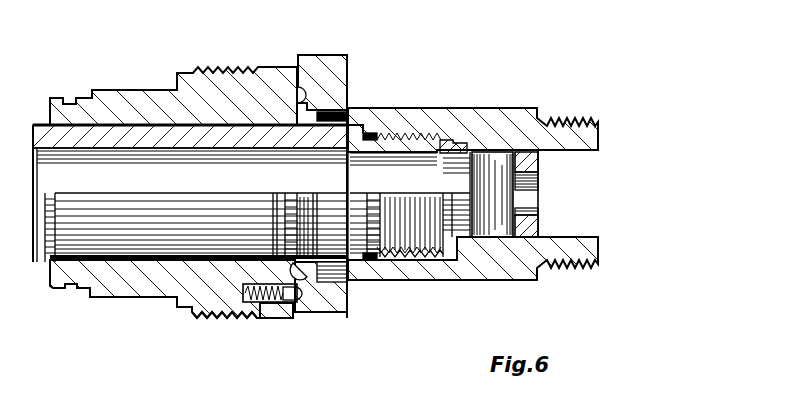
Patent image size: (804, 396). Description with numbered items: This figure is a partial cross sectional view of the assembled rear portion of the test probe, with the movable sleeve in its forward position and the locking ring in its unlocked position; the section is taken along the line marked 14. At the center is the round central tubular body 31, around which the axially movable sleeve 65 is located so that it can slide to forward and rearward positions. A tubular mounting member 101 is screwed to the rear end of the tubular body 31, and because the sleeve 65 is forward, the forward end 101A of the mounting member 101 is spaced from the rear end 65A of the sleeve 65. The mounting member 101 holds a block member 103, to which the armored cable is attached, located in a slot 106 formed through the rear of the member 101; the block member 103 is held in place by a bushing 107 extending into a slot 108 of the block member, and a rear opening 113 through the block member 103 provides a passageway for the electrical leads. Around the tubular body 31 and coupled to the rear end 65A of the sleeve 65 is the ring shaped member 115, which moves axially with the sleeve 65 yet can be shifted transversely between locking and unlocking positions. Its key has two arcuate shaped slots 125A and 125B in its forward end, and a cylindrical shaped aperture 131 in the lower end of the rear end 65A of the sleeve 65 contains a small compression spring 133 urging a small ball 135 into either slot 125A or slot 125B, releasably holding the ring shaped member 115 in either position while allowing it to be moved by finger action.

The central tubular body 31 is at (118, 135).
The axially movable sleeve 65 is at (200, 70).
The rear end of sleeve 65A is at (297, 108).
The section line 14- 14 is at (350, 18).
The tubular mounting member 101 is at (478, 108).
The forward end of mounting member 101A is at (355, 115).
The bushing 107 is at (463, 152).
The slot of block member 108 is at (505, 160).
The block member 103 is at (540, 160).
The rear opening 113 is at (530, 191).
The slot 106 is at (490, 237).
The ring shaped member 115 is at (318, 318).
The arcuate shaped slot 125A is at (300, 275).
The arcuate shaped slot 125B is at (306, 288).
The compression spring 133 is at (177, 301).
The cylindrical shaped aperture 131 is at (254, 316).
The ball 135 is at (285, 318).